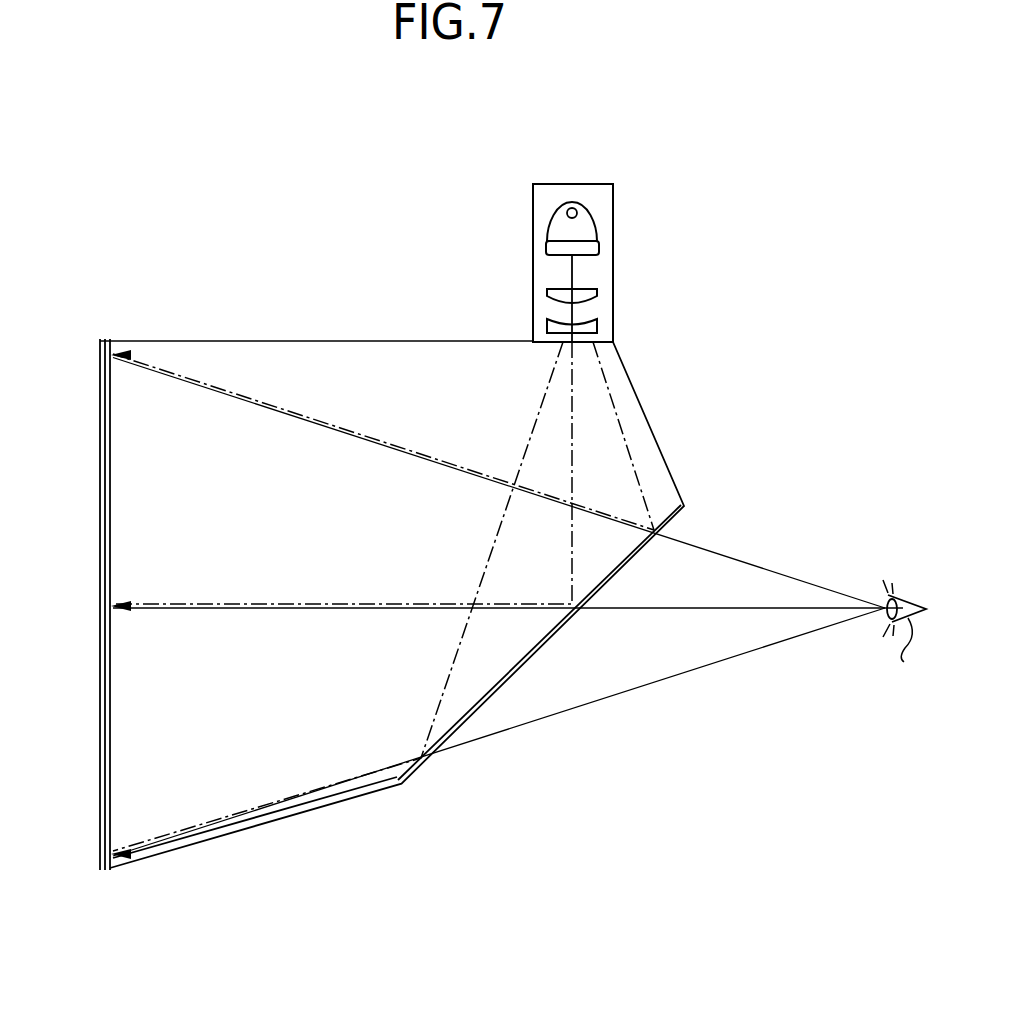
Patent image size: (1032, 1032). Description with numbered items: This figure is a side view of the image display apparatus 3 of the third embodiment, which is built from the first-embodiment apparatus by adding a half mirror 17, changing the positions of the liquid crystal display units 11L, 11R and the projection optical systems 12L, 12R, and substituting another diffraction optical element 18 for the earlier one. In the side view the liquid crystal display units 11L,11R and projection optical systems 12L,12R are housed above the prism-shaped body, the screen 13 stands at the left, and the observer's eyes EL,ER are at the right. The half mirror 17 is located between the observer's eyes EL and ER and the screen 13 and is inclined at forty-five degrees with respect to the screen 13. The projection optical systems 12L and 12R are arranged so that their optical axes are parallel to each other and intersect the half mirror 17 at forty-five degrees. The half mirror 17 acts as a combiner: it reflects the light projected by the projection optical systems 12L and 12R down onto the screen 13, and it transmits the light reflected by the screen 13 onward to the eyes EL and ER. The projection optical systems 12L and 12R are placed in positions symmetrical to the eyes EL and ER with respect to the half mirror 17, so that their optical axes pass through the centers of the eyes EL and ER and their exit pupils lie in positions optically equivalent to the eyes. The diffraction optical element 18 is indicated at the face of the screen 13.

The image display apparatus 3 is at (413, 837).
The screen 13 is at (100, 728).
The half mirror 17 is at (475, 713).
The diffraction optical element 18 is at (112, 400).
The liquid crystal display units 11L,11R is at (654, 228).
The liquid crystal display unit 11L is at (654, 228).
The liquid crystal display unit 11R is at (598, 234).
The projection optical systems 12L,12R is at (668, 298).
The projection optical system 12L is at (668, 298).
The projection optical system 12R is at (600, 312).
The observer's eyes EL,ER is at (885, 640).
The observer's eye EL is at (885, 640).
The observer's eye ER is at (885, 640).